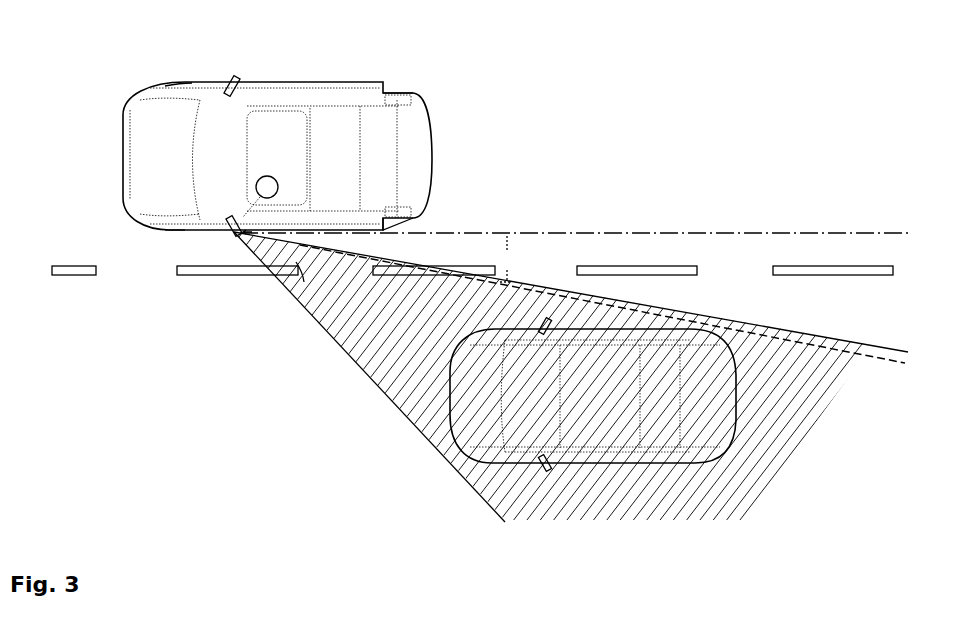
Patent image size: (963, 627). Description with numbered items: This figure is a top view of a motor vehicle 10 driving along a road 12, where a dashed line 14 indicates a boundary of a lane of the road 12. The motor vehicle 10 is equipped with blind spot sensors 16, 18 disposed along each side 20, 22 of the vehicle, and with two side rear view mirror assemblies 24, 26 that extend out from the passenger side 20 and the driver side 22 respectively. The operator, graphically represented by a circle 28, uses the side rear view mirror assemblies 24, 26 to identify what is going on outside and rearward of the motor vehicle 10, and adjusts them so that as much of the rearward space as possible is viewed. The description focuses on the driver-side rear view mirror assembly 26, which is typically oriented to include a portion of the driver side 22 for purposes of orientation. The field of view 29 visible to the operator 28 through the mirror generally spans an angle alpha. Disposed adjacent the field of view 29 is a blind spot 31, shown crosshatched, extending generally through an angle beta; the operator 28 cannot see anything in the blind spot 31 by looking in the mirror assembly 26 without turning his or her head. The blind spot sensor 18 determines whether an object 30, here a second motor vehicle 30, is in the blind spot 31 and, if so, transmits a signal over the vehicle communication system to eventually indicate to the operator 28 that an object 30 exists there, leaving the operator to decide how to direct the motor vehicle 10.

The motor vehicle 10 is at (125, 118).
The road 12 is at (576, 167).
The dashed line 14 is at (822, 276).
The blind spot sensor 16 is at (392, 88).
The blind spot sensor 18 is at (400, 229).
The passenger side 20 is at (185, 83).
The driver side 22 is at (178, 232).
The side rear view mirror assembly 24 is at (236, 78).
The side rear view mirror assembly 26 is at (229, 236).
The operator 28 is at (270, 176).
The field of view 29 is at (668, 232).
The object 30 is at (450, 392).
The blind spot 31 is at (338, 340).